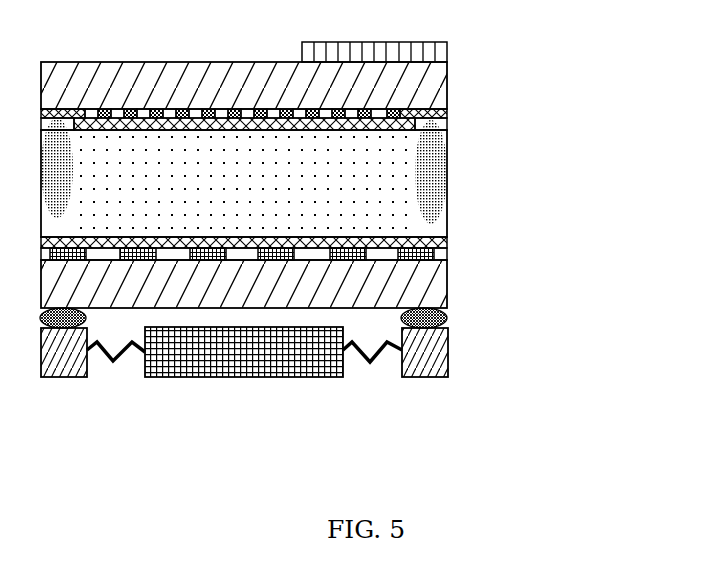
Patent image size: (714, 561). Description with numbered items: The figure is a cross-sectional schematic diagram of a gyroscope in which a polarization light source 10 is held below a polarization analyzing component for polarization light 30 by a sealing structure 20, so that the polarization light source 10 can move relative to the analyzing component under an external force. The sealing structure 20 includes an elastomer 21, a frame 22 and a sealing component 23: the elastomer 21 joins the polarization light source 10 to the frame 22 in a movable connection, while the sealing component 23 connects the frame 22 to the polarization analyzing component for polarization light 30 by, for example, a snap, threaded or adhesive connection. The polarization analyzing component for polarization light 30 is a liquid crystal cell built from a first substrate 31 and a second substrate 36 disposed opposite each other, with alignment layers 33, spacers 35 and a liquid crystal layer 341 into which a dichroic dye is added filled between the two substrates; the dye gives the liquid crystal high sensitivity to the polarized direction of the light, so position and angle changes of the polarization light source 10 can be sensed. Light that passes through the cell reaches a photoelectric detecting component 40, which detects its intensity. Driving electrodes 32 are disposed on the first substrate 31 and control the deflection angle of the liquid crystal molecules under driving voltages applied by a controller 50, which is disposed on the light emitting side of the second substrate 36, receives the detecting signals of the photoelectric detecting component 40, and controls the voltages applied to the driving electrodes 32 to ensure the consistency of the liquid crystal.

The polarization light source 10 is at (243, 377).
The sealing structure 20 is at (586, 343).
The elastomer 21 is at (386, 343).
The frame 22 is at (448, 362).
The sealing component 23 is at (447, 318).
The polarization analyzing component for polarization light 30 is at (586, 97).
The first substrate 31 is at (447, 291).
The driving electrodes 32 is at (435, 255).
The alignment layers 33 is at (447, 114).
The spacers 35 is at (429, 174).
The liquid crystal layer into which a dichroic dye is added 341 is at (243, 182).
The second substrate 36 is at (447, 99).
The photoelectric detecting component 40 is at (383, 114).
The controller 50 is at (373, 43).